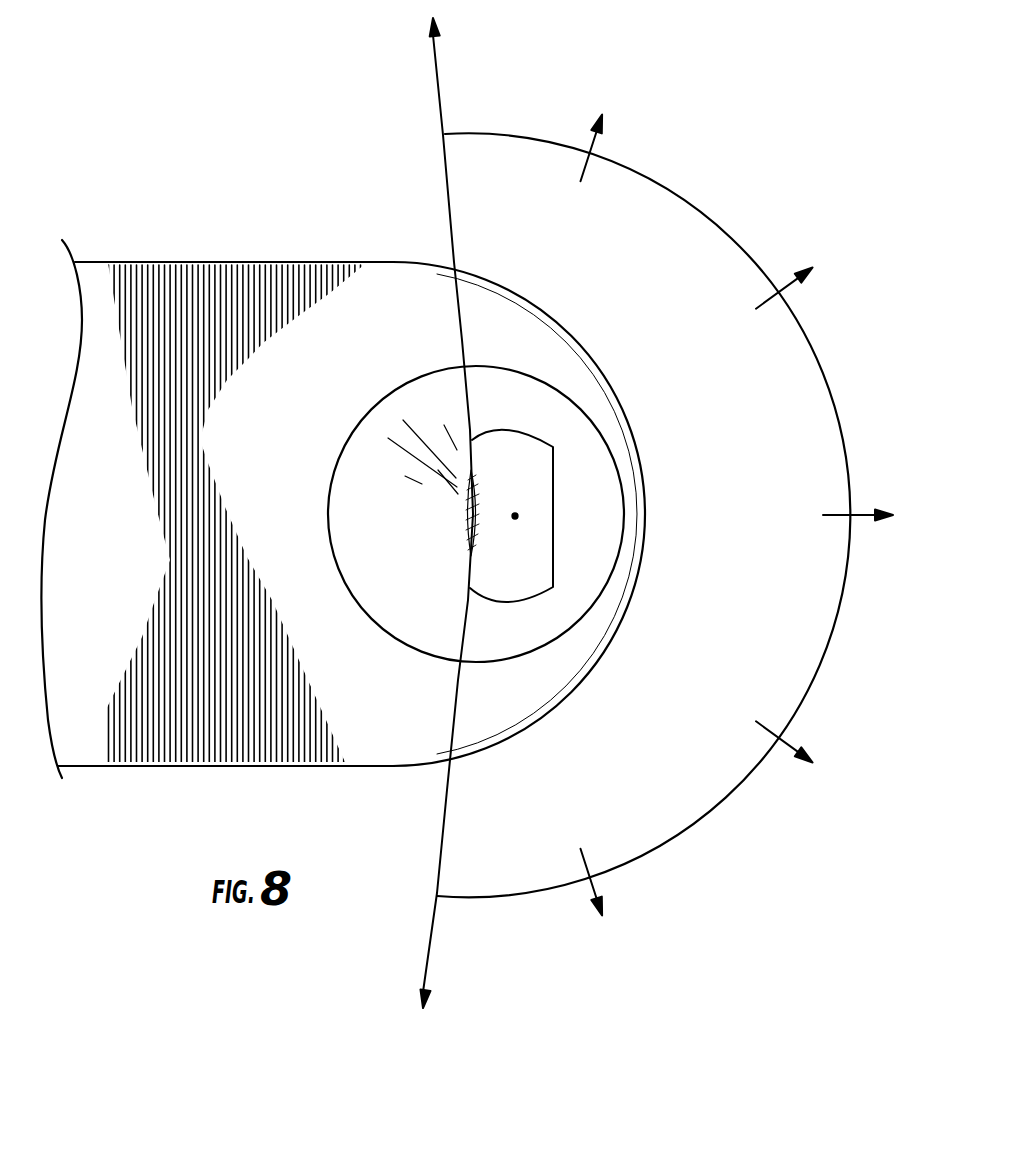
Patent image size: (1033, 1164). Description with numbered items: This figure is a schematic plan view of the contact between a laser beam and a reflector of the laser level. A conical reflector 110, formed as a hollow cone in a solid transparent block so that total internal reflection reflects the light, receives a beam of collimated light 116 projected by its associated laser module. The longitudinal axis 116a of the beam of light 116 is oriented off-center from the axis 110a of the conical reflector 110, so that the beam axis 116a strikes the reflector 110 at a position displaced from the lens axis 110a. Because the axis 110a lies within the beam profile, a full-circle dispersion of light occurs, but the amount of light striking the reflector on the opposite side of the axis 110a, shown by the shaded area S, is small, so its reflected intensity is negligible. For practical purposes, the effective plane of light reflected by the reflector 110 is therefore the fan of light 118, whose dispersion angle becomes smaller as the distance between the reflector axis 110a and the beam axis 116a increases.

The fan of light 118 is at (693, 198).
The conical reflector 110 is at (557, 388).
The beam of collimated light 116 is at (553, 475).
The longitudinal axis of the beam of light 116a is at (518, 516).
The axis of the conical reflector 110a is at (477, 513).
The shaded area S is at (477, 513).